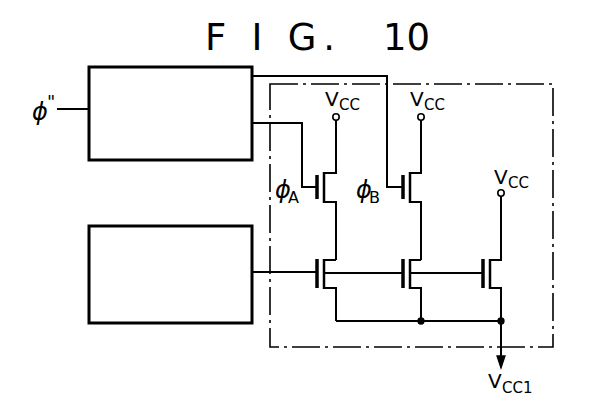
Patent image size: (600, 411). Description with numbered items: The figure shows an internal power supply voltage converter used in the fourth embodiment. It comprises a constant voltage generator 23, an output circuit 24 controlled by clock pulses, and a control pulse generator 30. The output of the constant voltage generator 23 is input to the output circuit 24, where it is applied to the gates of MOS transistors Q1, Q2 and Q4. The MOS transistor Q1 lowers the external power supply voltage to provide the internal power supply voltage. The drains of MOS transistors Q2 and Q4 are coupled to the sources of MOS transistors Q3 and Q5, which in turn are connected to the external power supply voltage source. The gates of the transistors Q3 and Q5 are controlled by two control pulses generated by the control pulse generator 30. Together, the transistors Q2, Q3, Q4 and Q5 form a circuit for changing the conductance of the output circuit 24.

The control pulse generator 30 is at (128, 161).
The constant voltage generator 23 is at (218, 205).
The output circuit 24 is at (298, 348).
The MOS transistor Q1 is at (497, 272).
The MOS transistor Q2 is at (414, 266).
The MOS transistor Q3 is at (420, 184).
The MOS transistor Q4 is at (334, 264).
The MOS transistor Q5 is at (334, 184).